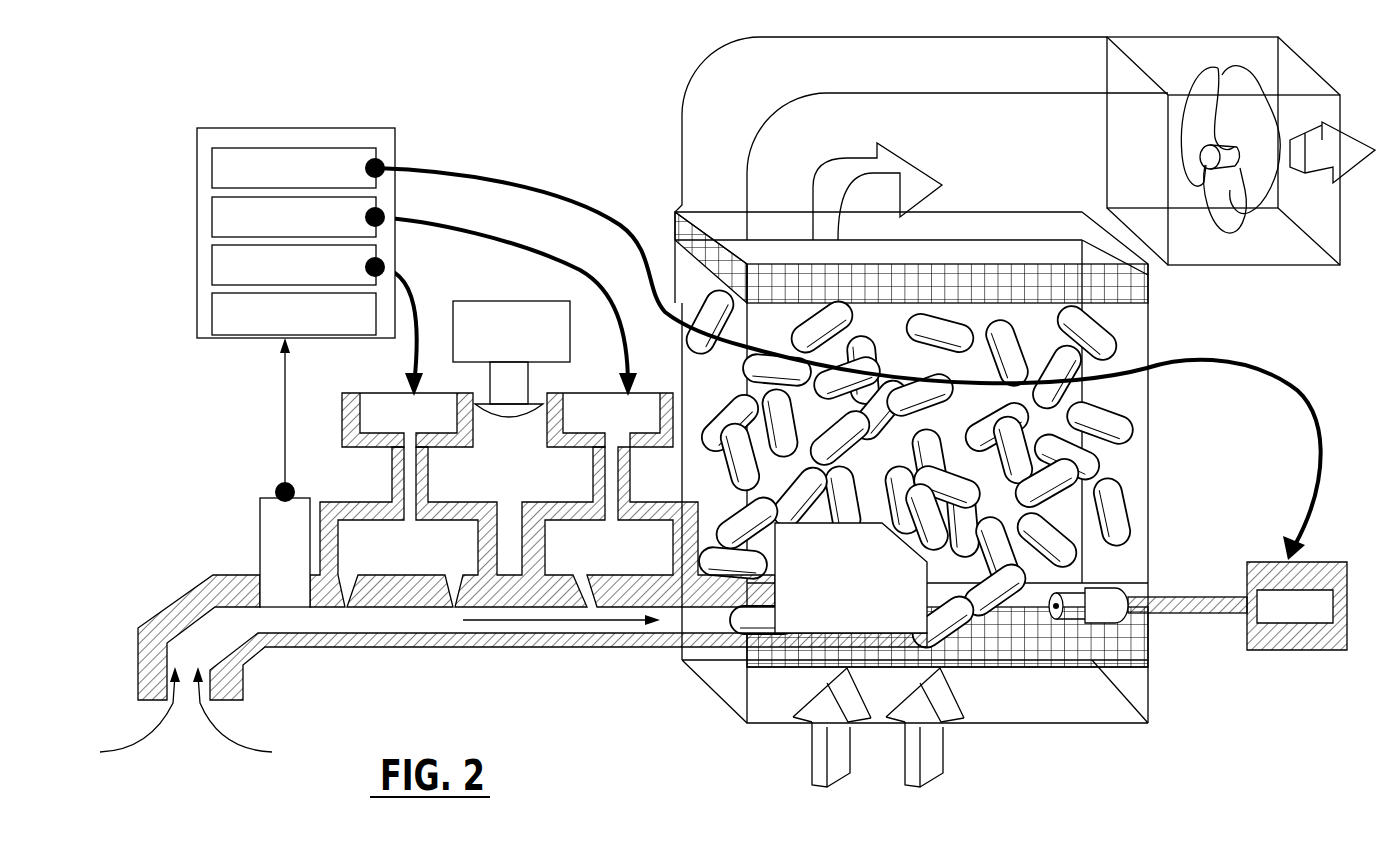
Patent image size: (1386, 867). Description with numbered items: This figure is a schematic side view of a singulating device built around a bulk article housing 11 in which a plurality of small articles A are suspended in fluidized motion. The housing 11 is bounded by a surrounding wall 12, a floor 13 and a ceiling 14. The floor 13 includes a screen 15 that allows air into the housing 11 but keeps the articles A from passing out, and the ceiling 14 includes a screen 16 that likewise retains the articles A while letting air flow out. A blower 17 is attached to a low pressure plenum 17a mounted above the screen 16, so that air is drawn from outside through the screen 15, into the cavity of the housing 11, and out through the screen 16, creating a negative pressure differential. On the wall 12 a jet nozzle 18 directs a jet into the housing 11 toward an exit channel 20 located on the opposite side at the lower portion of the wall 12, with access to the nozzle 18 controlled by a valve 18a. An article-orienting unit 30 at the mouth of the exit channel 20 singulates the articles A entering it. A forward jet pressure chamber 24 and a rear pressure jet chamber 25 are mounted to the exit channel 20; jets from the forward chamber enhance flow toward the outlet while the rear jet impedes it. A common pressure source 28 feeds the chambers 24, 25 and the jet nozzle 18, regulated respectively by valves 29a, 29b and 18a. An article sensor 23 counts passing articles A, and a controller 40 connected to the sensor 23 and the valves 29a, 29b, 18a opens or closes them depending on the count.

The bulk article housing 11 is at (1160, 417).
The surrounding wall 12 is at (1133, 461).
The floor 13 is at (1098, 708).
The ceiling 14 is at (1125, 267).
The screen 15 is at (1033, 637).
The screen 16 is at (1128, 292).
The blower 17 is at (1237, 82).
The low pressure plenum 17a is at (1017, 120).
The jet nozzle 18 is at (1092, 625).
The valve 18a is at (1308, 593).
The exit channel 20 is at (550, 668).
The article sensor 23 is at (272, 535).
The forward jet pressure chamber 24 is at (438, 520).
The rear pressure jet chamber 25 is at (585, 518).
The pressure source 28 is at (498, 310).
The valve 29a is at (385, 413).
The valve 29b is at (600, 415).
The article-orienting unit 30 is at (803, 678).
The controller 40 is at (350, 138).
The articles A is at (1050, 540).